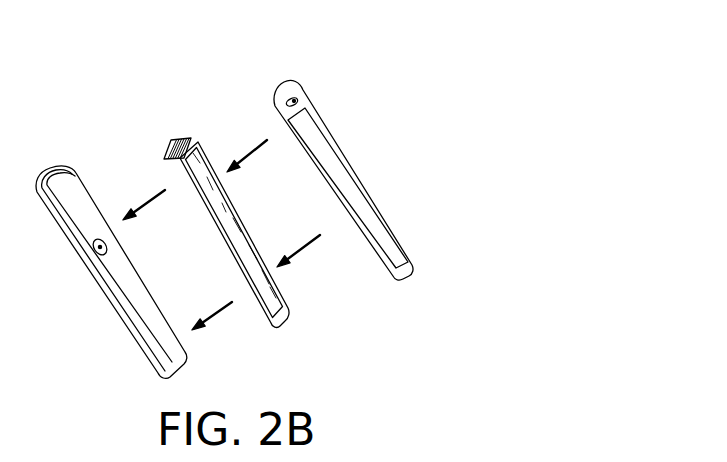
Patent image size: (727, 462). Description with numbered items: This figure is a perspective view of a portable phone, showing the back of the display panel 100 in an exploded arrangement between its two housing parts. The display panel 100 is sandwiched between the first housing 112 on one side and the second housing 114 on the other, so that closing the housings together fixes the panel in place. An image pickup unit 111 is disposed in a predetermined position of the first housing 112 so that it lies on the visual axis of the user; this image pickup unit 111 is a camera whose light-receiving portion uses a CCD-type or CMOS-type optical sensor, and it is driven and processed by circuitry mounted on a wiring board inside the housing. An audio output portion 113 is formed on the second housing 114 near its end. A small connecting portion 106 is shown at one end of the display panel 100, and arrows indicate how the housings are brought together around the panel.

The display panel 100 is at (236, 207).
The connector 106 is at (183, 140).
The image pickup unit 111 is at (103, 239).
The first housing 112 is at (120, 320).
The audio output portion 113 is at (296, 98).
The second housing 114 is at (353, 170).